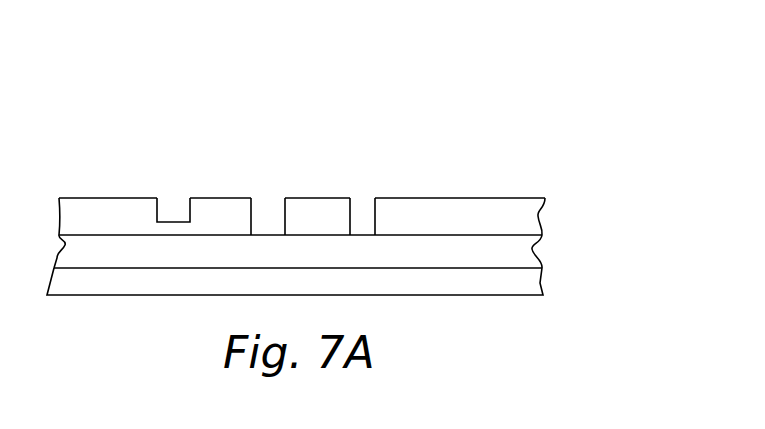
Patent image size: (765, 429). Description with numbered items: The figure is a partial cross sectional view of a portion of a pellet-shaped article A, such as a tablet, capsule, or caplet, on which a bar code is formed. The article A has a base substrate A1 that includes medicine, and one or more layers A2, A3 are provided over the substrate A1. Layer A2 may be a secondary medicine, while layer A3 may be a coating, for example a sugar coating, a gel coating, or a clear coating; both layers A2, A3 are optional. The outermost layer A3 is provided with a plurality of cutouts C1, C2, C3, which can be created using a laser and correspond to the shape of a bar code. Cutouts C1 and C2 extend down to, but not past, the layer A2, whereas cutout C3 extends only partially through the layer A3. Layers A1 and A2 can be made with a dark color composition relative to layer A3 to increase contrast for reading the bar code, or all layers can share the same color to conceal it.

The pellet-shaped article A is at (549, 131).
The base substrate A1 is at (525, 283).
The layer A2 is at (523, 248).
The layer A3 is at (527, 218).
The cutout C1 is at (362, 212).
The cutout C2 is at (267, 210).
The cutout C3 is at (173, 210).